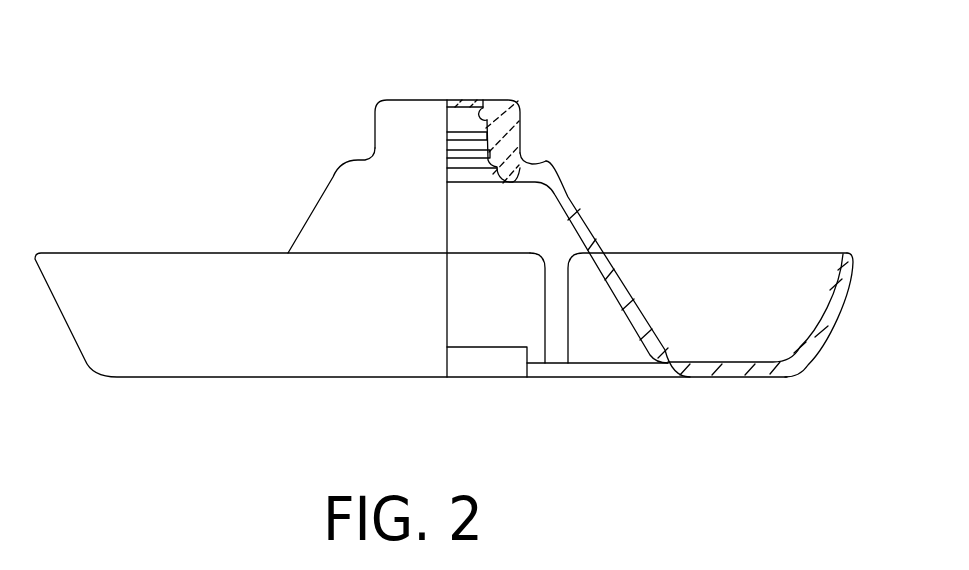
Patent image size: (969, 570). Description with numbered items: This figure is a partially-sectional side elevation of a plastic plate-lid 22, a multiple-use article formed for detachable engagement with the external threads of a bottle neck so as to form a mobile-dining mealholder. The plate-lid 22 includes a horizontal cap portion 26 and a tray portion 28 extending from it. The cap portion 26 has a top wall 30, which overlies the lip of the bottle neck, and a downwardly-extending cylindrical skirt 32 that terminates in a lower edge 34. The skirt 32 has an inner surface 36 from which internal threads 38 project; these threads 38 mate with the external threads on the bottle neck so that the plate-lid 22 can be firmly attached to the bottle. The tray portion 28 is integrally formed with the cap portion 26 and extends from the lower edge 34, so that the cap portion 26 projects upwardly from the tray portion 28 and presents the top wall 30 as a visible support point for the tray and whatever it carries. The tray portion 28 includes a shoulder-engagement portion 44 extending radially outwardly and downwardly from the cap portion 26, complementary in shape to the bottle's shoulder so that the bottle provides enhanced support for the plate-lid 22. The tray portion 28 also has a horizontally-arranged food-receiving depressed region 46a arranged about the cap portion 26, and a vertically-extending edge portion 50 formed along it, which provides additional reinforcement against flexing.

The plate-lid 22 is at (212, 396).
The cap portion 26 is at (390, 100).
The tray portion 28 is at (580, 208).
The top wall 30 is at (488, 100).
The cylindrical skirt 32 is at (508, 127).
The lower edge 34 is at (521, 157).
The inner surface 36 is at (489, 106).
The internal threads 38 is at (483, 137).
The shoulder-engagement portion 44 is at (337, 208).
The food-receiving depressed region 46a is at (750, 267).
The vertically-extending edge portion 50 is at (830, 333).